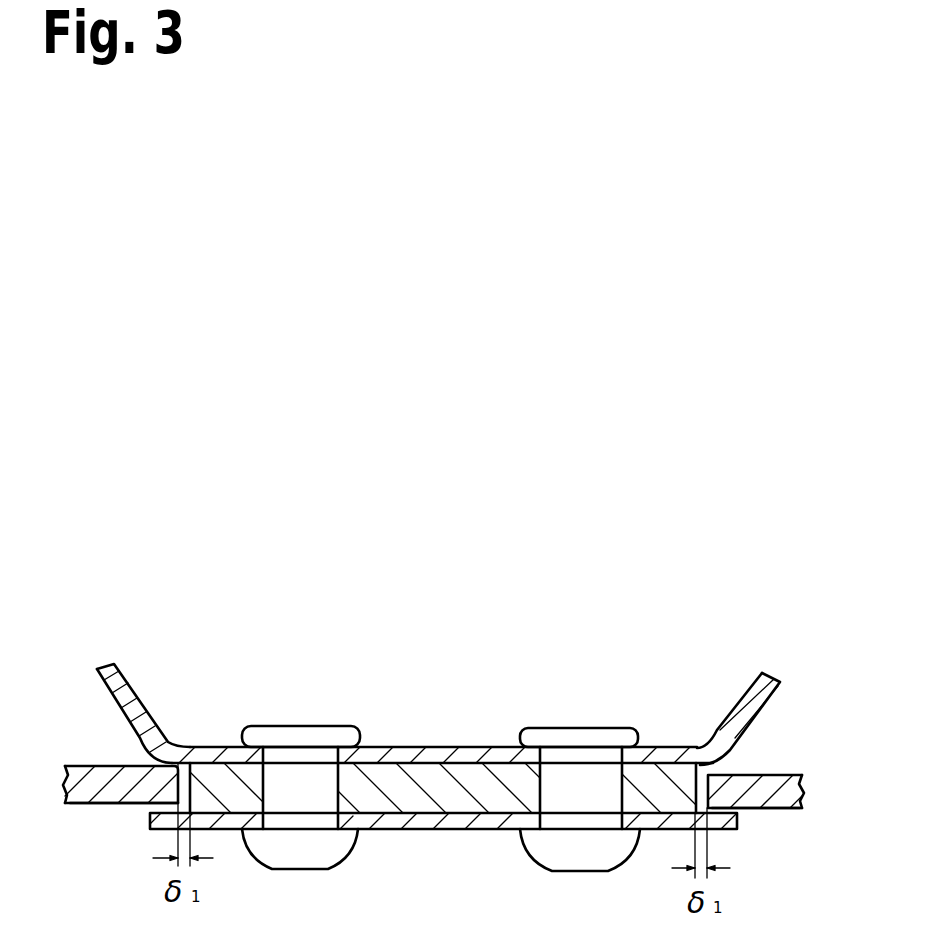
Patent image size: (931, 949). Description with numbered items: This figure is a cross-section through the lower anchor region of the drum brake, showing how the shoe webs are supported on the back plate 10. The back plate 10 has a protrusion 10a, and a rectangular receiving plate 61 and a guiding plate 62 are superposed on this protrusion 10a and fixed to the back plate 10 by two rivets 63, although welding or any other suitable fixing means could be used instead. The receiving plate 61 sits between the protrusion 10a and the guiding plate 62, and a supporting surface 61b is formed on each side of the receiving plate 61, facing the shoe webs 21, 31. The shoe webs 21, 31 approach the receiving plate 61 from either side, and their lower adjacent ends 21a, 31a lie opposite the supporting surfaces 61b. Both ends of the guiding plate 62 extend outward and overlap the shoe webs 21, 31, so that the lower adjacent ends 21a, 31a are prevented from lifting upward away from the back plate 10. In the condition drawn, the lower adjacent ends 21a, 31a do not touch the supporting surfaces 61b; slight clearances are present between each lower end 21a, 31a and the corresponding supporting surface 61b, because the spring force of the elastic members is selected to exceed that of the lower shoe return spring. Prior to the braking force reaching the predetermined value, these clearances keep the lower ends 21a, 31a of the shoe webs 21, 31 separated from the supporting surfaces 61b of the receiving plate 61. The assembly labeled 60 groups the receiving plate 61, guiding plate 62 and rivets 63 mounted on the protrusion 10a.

The back plate 10 is at (438, 675).
The protrusion 10a is at (655, 746).
The shoe web 21 is at (115, 783).
The lower adjacent end of shoe web 21a is at (117, 797).
The shoe web 31 is at (768, 792).
The lower adjacent end of shoe web 31a is at (768, 810).
The cushion member 60 is at (447, 791).
The rectangular receiving plate 61 is at (456, 757).
The supporting surface 61b is at (168, 754).
The guiding plate 62 is at (400, 830).
The rivet 63 is at (312, 725).